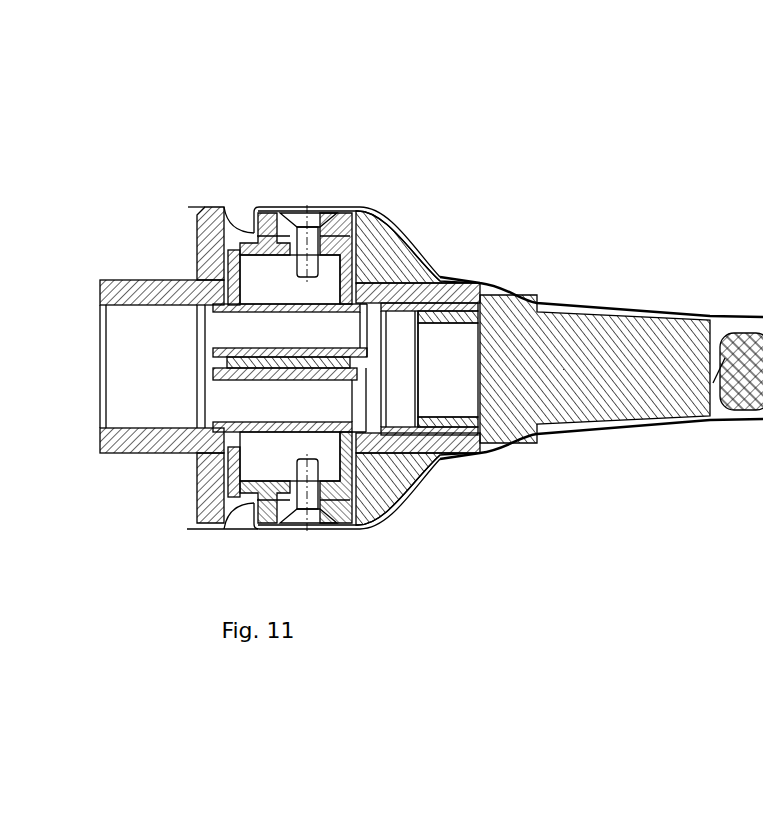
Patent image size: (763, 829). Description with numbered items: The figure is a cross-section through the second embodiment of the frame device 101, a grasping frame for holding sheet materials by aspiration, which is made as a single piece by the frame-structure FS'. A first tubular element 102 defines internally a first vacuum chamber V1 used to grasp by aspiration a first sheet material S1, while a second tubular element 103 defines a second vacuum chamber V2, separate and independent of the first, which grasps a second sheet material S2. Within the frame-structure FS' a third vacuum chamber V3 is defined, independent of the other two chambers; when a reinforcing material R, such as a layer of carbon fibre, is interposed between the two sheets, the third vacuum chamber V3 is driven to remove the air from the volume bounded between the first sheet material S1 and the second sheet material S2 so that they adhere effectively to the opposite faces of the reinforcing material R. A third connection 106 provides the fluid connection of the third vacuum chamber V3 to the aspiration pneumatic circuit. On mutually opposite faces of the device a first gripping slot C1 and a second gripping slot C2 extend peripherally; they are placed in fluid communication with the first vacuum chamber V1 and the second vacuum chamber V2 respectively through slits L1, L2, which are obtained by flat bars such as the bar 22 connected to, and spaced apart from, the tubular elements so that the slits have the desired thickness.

The frame device 101 is at (312, 167).
The first tubular element 102 is at (237, 268).
The second tubular element 103 is at (227, 531).
The third connection 106 is at (105, 453).
The bar 22 is at (762, 585).
The first slit L1 is at (183, 200).
The second slit L2 is at (193, 493).
The first vacuum chamber V1 is at (268, 283).
The second vacuum chamber V2 is at (332, 468).
The third vacuum chamber V3 is at (403, 380).
The first gripping slot C1 is at (247, 187).
The second gripping slot C2 is at (245, 552).
The first sheet material S1 is at (435, 262).
The second sheet material S2 is at (510, 440).
The frame-structure FS' is at (559, 362).
The reinforcing material R is at (733, 417).